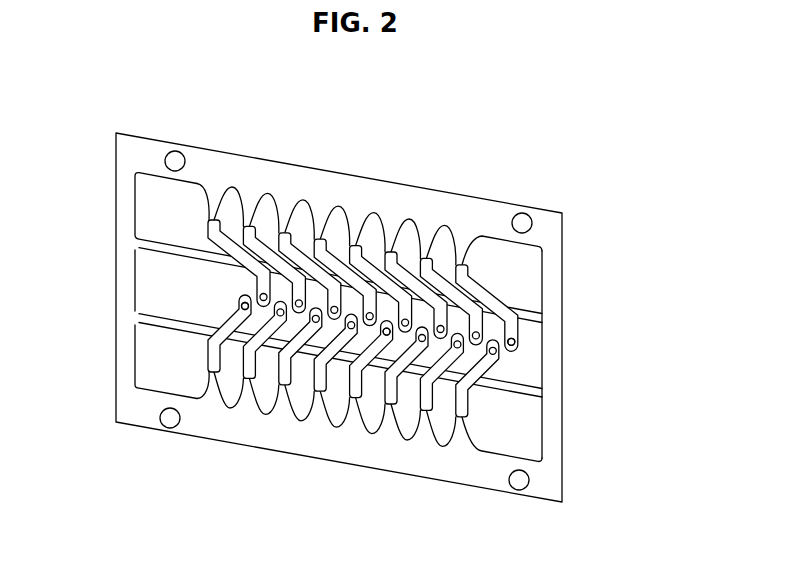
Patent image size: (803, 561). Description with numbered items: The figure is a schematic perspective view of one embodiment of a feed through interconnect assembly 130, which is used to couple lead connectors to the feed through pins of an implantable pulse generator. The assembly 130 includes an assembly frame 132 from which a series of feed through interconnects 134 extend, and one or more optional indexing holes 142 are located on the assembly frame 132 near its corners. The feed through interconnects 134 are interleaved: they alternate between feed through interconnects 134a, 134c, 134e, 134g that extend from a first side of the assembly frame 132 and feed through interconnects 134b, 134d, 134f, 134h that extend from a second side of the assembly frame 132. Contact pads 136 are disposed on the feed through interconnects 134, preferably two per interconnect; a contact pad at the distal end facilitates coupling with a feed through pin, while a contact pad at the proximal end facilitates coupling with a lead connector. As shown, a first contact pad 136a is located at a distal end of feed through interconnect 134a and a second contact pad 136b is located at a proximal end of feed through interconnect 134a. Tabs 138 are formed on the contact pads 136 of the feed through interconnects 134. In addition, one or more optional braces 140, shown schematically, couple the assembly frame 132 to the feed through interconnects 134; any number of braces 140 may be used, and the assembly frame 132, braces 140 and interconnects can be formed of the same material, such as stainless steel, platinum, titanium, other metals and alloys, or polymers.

The feed through interconnect assembly 130 is at (506, 138).
The assembly frame 132 is at (473, 222).
The feed through interconnects 134 is at (475, 384).
The feed through interconnect 134a is at (211, 362).
The feed through interconnect 134b is at (237, 261).
The feed through interconnect 134c is at (263, 342).
The feed through interconnect 134d is at (270, 264).
The feed through interconnect 134e is at (299, 345).
The feed through interconnect 134f is at (309, 273).
The feed through interconnect 134g is at (336, 356).
The feed through interconnect 134h is at (350, 284).
The contact pads 136 is at (466, 277).
The first contact pad 136a is at (238, 311).
The second contact pad 136b is at (217, 355).
The tabs 138 is at (516, 346).
The braces 140 is at (527, 311).
The indexing holes 142 is at (179, 157).